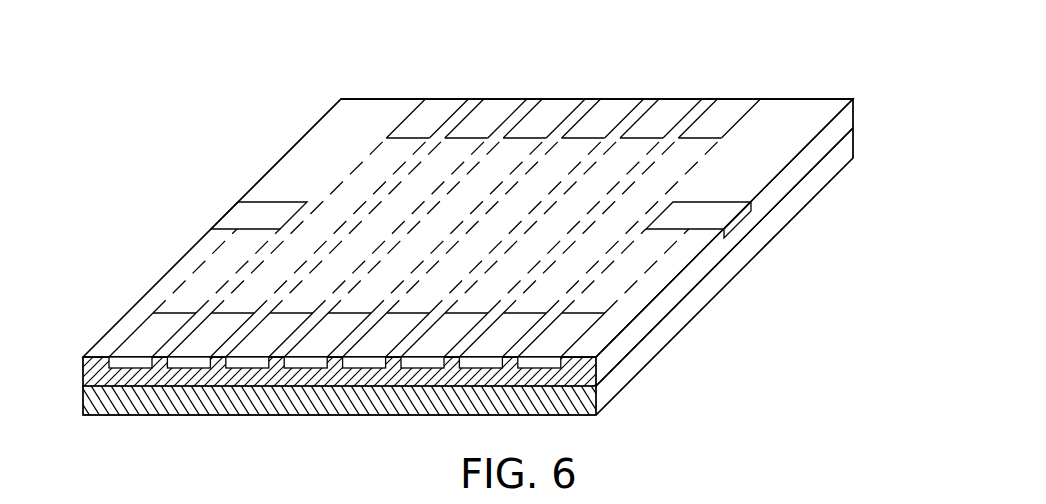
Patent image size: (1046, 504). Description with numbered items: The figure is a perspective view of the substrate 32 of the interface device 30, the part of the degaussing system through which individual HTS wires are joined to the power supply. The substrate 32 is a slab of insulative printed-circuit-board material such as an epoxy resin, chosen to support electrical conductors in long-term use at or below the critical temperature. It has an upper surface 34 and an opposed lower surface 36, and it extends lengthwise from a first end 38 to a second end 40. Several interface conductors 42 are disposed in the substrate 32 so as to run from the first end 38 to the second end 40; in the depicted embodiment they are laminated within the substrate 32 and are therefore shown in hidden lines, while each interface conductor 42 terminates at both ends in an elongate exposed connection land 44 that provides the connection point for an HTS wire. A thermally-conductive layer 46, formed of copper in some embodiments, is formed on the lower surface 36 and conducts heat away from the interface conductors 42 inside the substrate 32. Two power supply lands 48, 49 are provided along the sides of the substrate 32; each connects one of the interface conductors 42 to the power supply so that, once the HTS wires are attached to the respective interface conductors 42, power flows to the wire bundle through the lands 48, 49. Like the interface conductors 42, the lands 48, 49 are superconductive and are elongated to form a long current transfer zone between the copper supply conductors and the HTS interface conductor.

The interface device 30 is at (258, 90).
The substrate 32 is at (846, 123).
The upper surface 34 is at (809, 99).
The lower surface 36 is at (833, 179).
The first end 38 is at (83, 373).
The second end 40 is at (384, 99).
The interface conductors 42 is at (280, 275).
The connection lands 44 is at (153, 342).
The thermally-conductive layer 46 is at (788, 202).
The power supply land 48 is at (245, 220).
The power supply land 49 is at (713, 212).